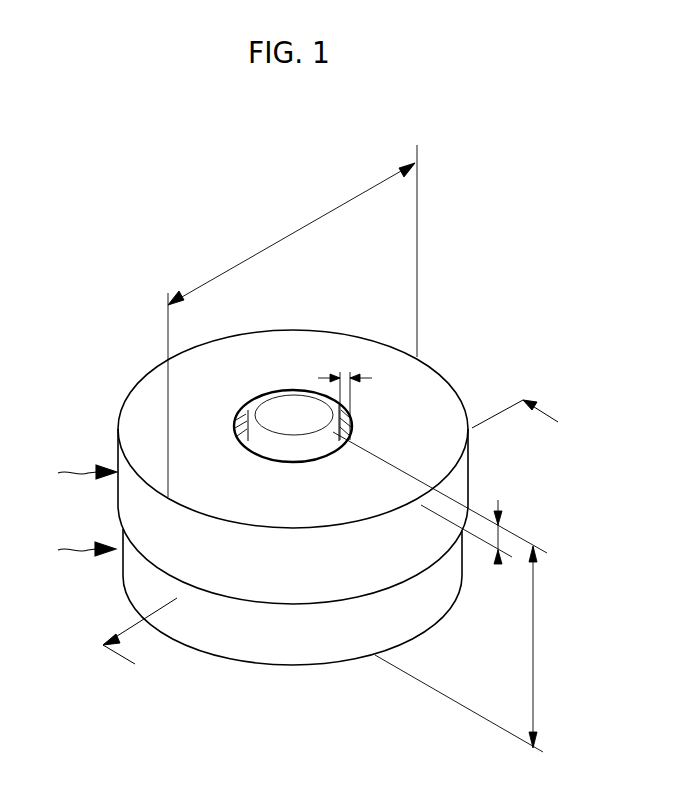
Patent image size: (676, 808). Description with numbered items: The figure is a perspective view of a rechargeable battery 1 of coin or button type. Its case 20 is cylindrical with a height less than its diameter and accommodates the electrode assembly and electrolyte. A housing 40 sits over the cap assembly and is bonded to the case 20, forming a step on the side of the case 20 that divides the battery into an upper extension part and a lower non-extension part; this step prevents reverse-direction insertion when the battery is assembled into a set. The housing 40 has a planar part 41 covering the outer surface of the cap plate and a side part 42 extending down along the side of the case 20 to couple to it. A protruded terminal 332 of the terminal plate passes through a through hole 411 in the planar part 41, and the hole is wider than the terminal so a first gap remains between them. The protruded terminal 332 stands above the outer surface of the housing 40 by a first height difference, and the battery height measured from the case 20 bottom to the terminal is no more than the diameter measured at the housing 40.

The rechargeable battery 1 is at (303, 176).
The case 20 is at (285, 658).
The housing 40 is at (518, 438).
The planar part 41 is at (452, 442).
The side part 42 is at (460, 483).
The protruded terminal 332 is at (288, 403).
The through hole 411 is at (248, 403).